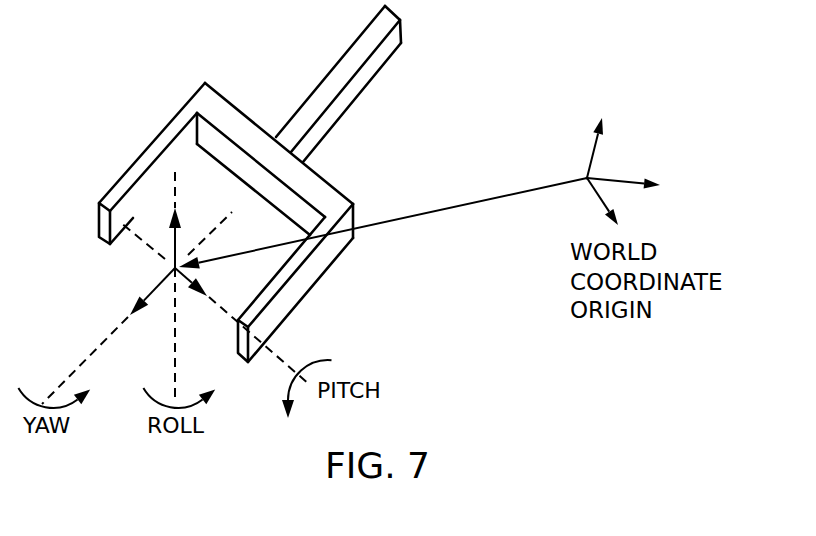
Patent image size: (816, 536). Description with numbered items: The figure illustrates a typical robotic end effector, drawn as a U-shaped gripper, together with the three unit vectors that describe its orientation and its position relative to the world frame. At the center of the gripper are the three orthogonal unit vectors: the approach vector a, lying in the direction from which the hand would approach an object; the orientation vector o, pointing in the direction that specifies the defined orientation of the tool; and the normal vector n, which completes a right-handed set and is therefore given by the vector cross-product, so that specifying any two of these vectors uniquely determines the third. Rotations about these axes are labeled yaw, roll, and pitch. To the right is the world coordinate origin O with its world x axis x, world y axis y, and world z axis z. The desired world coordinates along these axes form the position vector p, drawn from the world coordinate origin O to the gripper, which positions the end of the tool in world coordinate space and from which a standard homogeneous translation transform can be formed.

The orientation vector o is at (202, 207).
The approach vector a is at (130, 295).
The normal vector n is at (234, 294).
The position vector p is at (443, 253).
The world x coordinate axis x is at (614, 208).
The world y coordinate axis y is at (633, 178).
The world z coordinate axis z is at (599, 132).
The world coordinate origin O is at (604, 165).